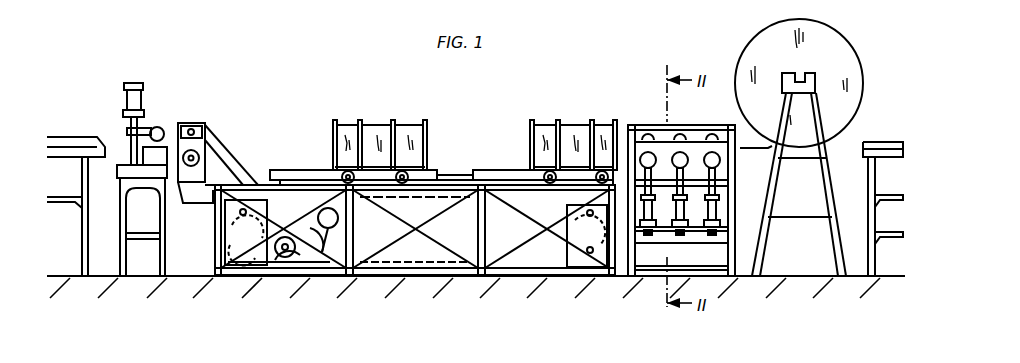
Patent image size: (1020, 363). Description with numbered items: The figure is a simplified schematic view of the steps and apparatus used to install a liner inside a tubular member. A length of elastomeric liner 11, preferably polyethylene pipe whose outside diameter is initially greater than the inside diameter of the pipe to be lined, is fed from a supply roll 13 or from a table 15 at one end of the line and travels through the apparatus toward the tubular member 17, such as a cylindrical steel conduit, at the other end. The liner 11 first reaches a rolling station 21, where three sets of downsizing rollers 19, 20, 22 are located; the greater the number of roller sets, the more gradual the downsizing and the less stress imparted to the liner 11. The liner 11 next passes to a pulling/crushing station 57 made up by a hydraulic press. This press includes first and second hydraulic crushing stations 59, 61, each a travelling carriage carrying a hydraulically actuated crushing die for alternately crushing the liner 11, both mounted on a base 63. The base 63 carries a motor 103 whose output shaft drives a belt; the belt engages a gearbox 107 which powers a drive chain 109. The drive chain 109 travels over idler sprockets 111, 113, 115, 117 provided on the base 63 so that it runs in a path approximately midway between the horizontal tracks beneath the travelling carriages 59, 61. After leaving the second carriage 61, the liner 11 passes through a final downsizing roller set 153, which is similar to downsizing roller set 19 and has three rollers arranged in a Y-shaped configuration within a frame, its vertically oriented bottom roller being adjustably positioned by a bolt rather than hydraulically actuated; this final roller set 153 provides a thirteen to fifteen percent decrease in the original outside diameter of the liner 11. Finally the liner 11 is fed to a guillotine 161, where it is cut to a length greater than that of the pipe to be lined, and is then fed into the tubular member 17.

The elastomeric liner 11 is at (746, 70).
The supply roll 13 is at (848, 54).
The table 15 is at (875, 142).
The tubular member 17 is at (77, 140).
The downsizing roller set 19 is at (716, 163).
The downsizing roller set 20 is at (676, 170).
The rolling station 21 is at (686, 172).
The downsizing roller set 22 is at (655, 172).
The pulling/crushing station 57 is at (367, 106).
The first hydraulic crushing station 59 is at (572, 125).
The second hydraulic crushing station 61 is at (413, 128).
The base 63 is at (470, 277).
The motor 103 is at (313, 237).
The gearbox 107 is at (292, 240).
The drive chain 109 is at (308, 177).
The idler sprocket 111 is at (235, 210).
The idler sprocket 113 is at (240, 250).
The idler sprocket 115 is at (583, 262).
The idler sprocket 117 is at (572, 262).
The final downsizing roller set 153 is at (204, 106).
The guillotine 161 is at (145, 102).